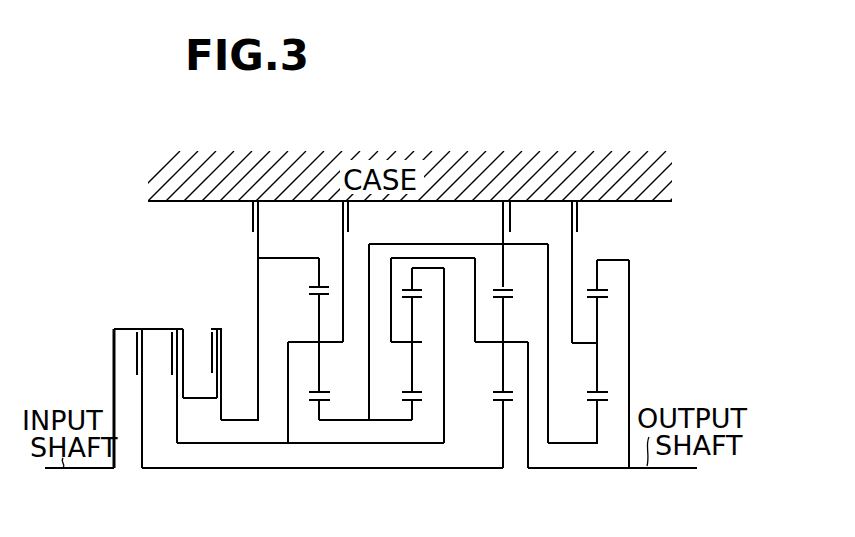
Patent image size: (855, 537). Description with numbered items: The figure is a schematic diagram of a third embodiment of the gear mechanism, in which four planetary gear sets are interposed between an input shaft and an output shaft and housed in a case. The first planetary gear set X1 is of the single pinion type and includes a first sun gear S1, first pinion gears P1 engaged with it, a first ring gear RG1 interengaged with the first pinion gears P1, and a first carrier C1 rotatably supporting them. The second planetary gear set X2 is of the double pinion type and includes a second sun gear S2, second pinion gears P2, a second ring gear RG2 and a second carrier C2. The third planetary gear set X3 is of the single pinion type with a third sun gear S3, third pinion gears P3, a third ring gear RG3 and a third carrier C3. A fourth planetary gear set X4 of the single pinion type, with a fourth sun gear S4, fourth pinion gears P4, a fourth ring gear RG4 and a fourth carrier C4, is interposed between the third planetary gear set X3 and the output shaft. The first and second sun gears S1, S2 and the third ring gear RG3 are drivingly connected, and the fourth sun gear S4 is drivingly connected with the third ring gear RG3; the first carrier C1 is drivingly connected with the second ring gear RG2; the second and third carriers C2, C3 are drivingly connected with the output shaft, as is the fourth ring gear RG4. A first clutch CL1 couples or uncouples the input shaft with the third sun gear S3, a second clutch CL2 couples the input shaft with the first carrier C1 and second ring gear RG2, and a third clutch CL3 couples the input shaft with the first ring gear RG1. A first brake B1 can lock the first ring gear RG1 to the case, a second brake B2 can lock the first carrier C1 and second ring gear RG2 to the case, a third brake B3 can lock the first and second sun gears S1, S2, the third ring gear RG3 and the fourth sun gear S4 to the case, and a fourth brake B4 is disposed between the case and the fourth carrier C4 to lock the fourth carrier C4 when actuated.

The first brake B1 is at (238, 311).
The second brake B2 is at (365, 271).
The third brake B3 is at (526, 244).
The fourth brake B4 is at (595, 272).
The first clutch CL1 is at (142, 330).
The second clutch CL2 is at (177, 328).
The third clutch CL3 is at (217, 330).
The first ring gear RG1 is at (320, 276).
The second ring gear RG2 is at (411, 277).
The third ring gear RG3 is at (506, 276).
The fourth ring gear RG4 is at (599, 283).
The first carrier C1 is at (313, 341).
The second carrier C2 is at (411, 343).
The third carrier C3 is at (494, 345).
The fourth carrier C4 is at (599, 341).
The first pinion gears P1 is at (320, 381).
The second pinion gears P2 is at (411, 378).
The third pinion gears P3 is at (504, 378).
The fourth pinion gears P4 is at (597, 373).
The first sun gear S1 is at (322, 408).
The second sun gear S2 is at (414, 408).
The third sun gear S3 is at (506, 408).
The fourth sun gear S4 is at (600, 408).
The first planetary gear set X1 is at (315, 406).
The second planetary gear set X2 is at (406, 406).
The third planetary gear set X3 is at (498, 406).
The fourth planetary gear set X4 is at (593, 406).